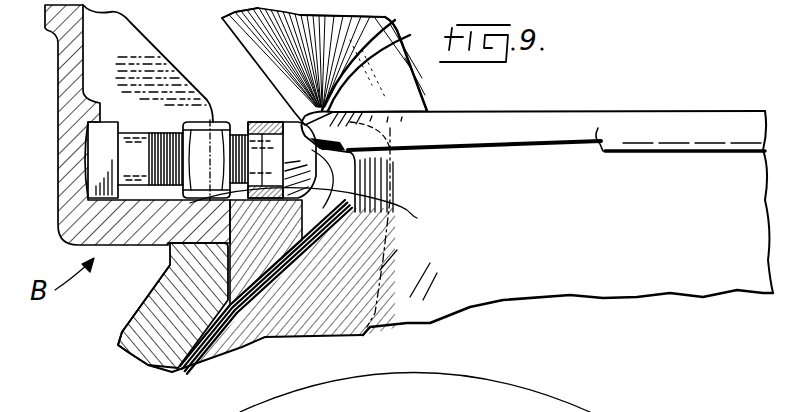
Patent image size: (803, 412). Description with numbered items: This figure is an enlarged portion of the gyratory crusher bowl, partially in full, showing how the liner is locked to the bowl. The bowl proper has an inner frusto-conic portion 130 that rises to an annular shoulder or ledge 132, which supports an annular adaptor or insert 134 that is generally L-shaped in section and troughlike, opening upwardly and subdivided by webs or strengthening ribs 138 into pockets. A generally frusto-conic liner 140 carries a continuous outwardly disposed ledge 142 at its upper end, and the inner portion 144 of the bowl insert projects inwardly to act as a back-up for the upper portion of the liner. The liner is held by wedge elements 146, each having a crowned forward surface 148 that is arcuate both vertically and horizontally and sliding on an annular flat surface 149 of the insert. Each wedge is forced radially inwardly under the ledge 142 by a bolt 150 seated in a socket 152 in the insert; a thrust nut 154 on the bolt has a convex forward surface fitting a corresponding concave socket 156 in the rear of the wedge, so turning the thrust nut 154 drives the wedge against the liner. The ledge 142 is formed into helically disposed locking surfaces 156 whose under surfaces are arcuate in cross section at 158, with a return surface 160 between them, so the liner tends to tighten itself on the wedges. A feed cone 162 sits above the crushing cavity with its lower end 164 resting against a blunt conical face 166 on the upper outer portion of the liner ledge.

The inner frusto-conic portion 130 is at (147, 357).
The annular shoulder or ledge 132 is at (198, 270).
The annular adaptor or insert 134 is at (65, 66).
The webs or strengthening ribs 138 is at (140, 52).
The liner 140 is at (487, 270).
The ledge 142 is at (368, 111).
The inner portion of the bowl insert 144 is at (261, 258).
The wedge element 146 is at (277, 119).
The crowned forward surface 148 is at (340, 182).
The annular flat surface 149 is at (318, 207).
The bolt 150 is at (133, 132).
The socket 152 is at (133, 84).
The thrust nut 154 is at (220, 120).
The concave socket / locking surfaces 156 is at (542, 150).
The arcuate under surface 158 is at (397, 164).
The return surface 160 is at (598, 130).
The feed cone 162 is at (222, 18).
The lower end of feed cone 164 is at (385, 21).
The blunt conical face 166 is at (393, 40).